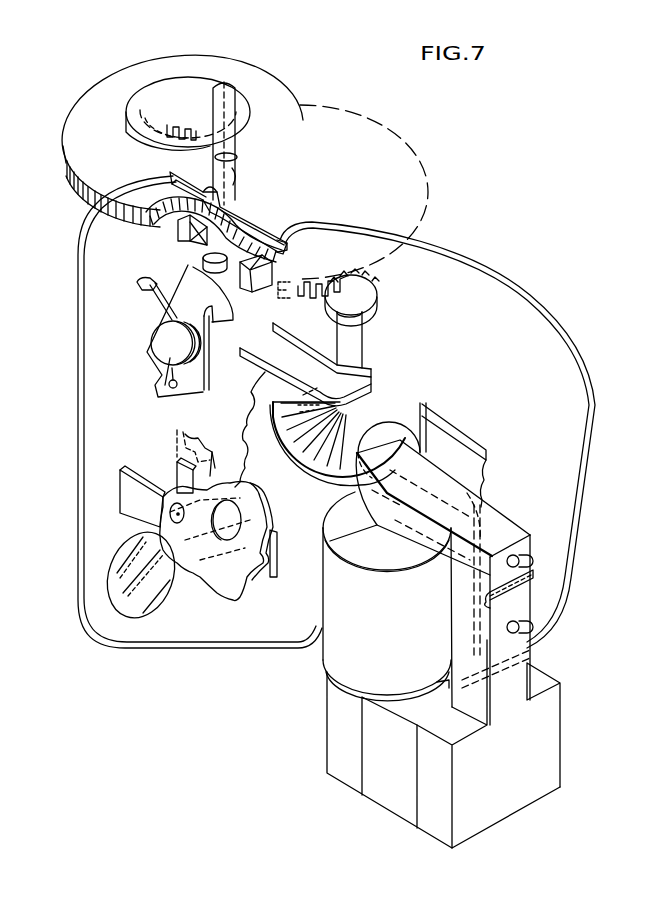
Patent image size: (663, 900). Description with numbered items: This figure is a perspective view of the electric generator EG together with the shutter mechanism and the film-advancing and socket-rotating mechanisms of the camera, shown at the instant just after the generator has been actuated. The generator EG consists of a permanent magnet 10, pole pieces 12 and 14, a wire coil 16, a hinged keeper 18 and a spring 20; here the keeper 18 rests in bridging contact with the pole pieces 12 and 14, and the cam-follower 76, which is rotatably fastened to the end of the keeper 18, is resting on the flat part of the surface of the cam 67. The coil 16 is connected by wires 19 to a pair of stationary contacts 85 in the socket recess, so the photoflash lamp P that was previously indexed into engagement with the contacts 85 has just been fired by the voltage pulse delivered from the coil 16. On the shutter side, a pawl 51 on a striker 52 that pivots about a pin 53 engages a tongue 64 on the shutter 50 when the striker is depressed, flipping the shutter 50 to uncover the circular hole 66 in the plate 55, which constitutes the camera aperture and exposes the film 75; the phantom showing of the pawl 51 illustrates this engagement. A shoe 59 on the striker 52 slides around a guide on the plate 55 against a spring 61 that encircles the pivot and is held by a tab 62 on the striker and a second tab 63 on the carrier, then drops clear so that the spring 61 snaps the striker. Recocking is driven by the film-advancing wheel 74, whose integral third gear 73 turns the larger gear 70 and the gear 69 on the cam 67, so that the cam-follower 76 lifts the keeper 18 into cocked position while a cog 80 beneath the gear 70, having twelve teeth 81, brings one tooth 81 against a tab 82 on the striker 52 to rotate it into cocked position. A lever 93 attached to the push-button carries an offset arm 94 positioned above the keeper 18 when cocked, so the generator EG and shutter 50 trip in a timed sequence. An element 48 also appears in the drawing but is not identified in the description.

The permanent magnet 10 is at (398, 808).
The pole piece 12 is at (348, 778).
The pole piece 14 is at (446, 830).
The wire coil 16 is at (330, 650).
The hinged keeper 18 is at (498, 520).
The wires 19 is at (78, 352).
The spring 20 is at (528, 572).
The elliptical cam 48 is at (165, 606).
The shutter 50 is at (128, 500).
The pawl 51 is at (197, 462).
The striker member 52 is at (190, 385).
The pin 53 is at (160, 343).
The plate 55 is at (256, 578).
The shoe 59 is at (218, 324).
The spring 61 is at (152, 302).
The tab 62 is at (162, 385).
The second tab 63 is at (134, 286).
The tongue 64 is at (178, 472).
The circular hole 66 is at (226, 538).
The cam 67 is at (430, 408).
The gear 69 is at (378, 290).
The gear 70 is at (376, 132).
The third gear 73 is at (188, 78).
The film-advancing wheel 74 is at (88, 92).
The film 75 is at (452, 436).
The cam-follower 76 is at (384, 424).
The cog 80 is at (178, 243).
The teeth 81 is at (272, 254).
The tab 82 is at (246, 292).
The stationary contacts 85 is at (248, 212).
The lever 93 is at (262, 380).
The offset arm 94 is at (372, 400).
The photoflash lamp P is at (246, 139).
The electric generator EG is at (560, 718).